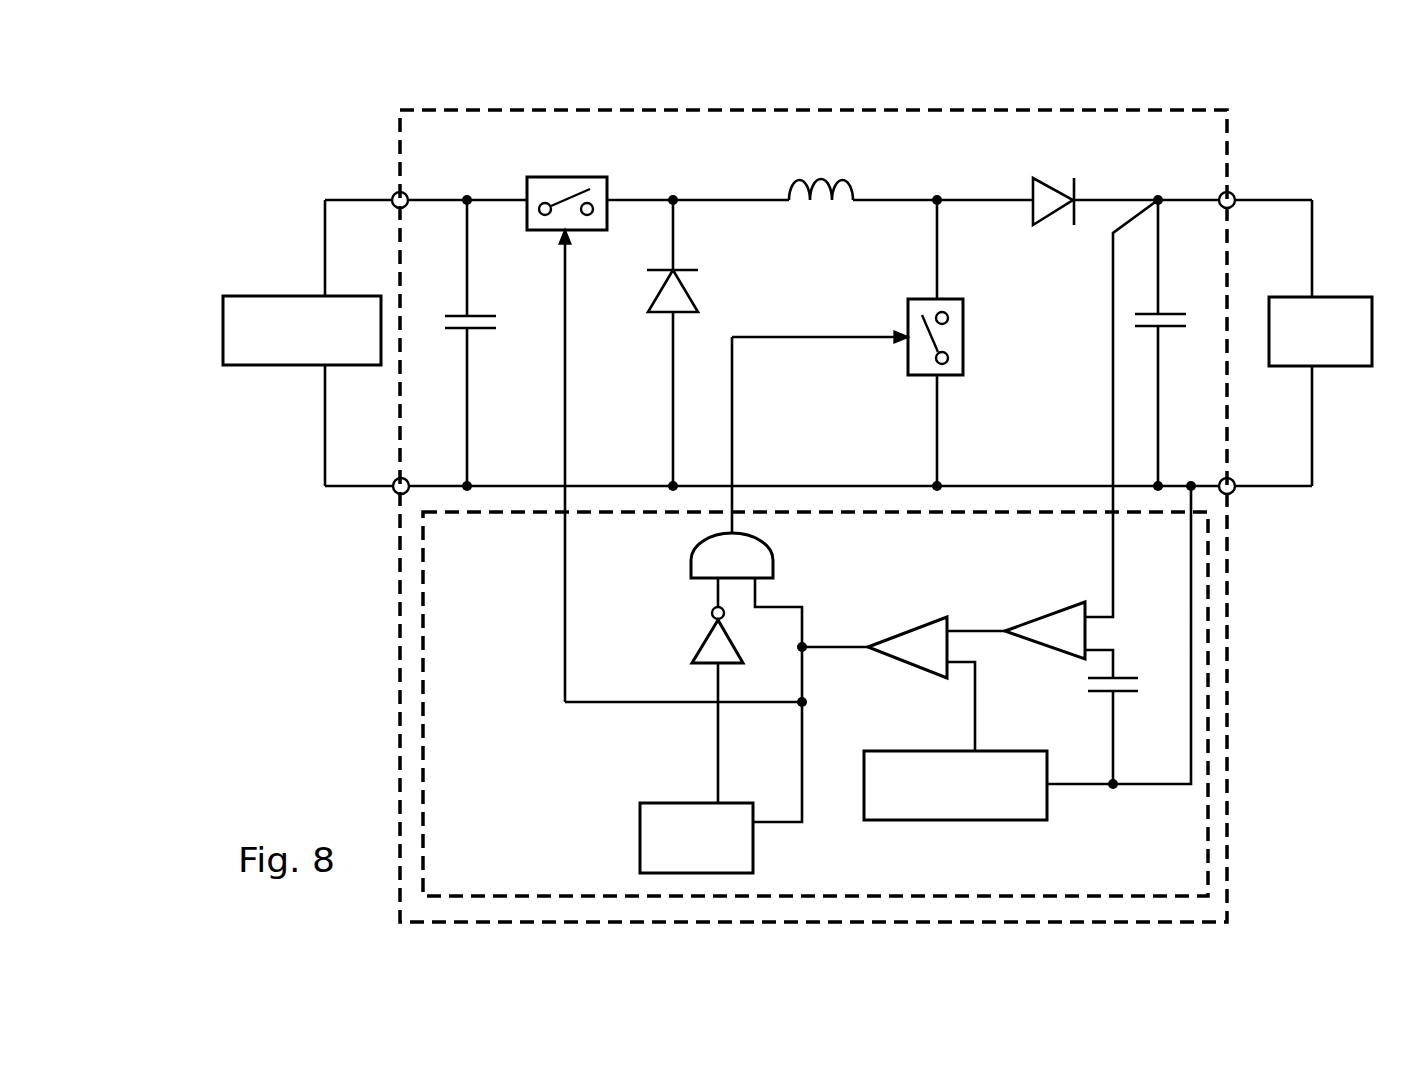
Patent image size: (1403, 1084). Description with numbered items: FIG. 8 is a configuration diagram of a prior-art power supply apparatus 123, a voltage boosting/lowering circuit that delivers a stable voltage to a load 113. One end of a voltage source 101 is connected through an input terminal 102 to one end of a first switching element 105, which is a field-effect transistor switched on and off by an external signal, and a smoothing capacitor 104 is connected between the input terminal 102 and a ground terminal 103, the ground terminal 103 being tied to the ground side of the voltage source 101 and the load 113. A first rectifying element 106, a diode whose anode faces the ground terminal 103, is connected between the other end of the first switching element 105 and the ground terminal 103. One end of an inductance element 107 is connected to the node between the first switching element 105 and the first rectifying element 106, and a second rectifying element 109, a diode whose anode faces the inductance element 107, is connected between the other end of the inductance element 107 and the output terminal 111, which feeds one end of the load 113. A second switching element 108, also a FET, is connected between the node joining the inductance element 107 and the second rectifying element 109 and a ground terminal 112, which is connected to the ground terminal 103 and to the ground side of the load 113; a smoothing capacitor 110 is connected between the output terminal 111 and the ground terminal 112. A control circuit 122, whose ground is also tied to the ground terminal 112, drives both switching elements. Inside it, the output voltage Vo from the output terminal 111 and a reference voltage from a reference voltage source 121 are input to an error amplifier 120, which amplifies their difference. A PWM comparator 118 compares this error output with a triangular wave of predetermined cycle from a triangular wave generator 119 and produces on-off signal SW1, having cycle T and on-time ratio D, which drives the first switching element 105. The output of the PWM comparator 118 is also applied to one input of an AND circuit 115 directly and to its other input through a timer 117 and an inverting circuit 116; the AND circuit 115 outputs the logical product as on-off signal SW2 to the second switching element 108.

The voltage source 101 is at (290, 366).
The input terminal 102 is at (392, 194).
The ground terminal 103 is at (395, 492).
The smoothing capacitor 104 is at (480, 312).
The first switching element 105 is at (575, 177).
The first rectifying element 106 is at (685, 314).
The inductance element 107 is at (797, 177).
The second switching element 108 is at (963, 338).
The second rectifying element 109 is at (1050, 183).
The smoothing capacitor 110 is at (1167, 330).
The output terminal 111 is at (1237, 190).
The ground terminal 112 is at (1239, 492).
The load 113 is at (1345, 368).
The AND circuit 115 is at (688, 552).
The inverting circuit 116 is at (700, 643).
The timer 117 is at (640, 823).
The PWM comparator 118 is at (912, 627).
The triangular wave generator 119 is at (997, 748).
The error amplifier 120 is at (1047, 613).
The reference voltage source 121 is at (1123, 675).
The control circuit 122 is at (1073, 897).
The power supply apparatus 123 is at (1227, 704).